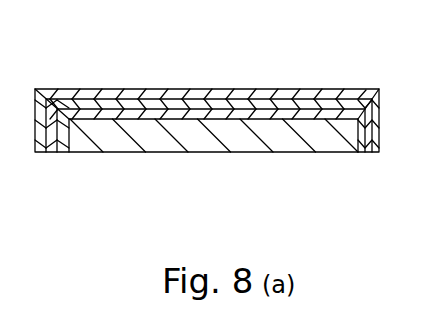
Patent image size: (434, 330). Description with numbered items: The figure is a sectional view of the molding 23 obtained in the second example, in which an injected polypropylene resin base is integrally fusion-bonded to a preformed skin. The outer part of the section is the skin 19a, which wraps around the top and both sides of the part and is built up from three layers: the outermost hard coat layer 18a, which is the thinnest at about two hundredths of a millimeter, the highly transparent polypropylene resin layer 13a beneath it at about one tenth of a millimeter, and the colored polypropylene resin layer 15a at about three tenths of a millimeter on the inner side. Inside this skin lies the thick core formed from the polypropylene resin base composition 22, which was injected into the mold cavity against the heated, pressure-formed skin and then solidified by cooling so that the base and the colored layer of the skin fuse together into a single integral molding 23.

The hard coat layer 18a is at (82, 97).
The highly transparent polypropylene resin layer 13a is at (160, 107).
The colored polypropylene resin layer 15a is at (237, 117).
The molding 23 is at (300, 88).
The polypropylene resin base composition 22 is at (190, 153).
The skin 19a is at (362, 154).